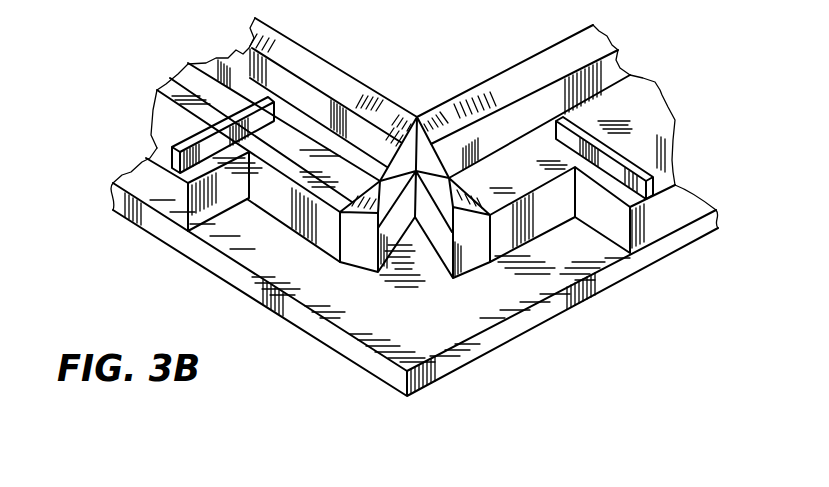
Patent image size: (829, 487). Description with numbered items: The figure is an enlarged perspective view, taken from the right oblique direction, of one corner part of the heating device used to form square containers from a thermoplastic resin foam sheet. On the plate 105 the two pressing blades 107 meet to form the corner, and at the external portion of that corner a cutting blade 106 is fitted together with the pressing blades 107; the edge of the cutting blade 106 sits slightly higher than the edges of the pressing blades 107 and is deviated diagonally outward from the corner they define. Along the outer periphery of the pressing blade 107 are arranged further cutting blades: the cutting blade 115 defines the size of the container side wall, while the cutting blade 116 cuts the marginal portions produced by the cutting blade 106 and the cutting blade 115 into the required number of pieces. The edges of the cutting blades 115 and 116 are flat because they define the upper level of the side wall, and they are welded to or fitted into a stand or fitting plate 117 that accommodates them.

The plate 105 is at (590, 266).
The cutting blade 106 is at (381, 215).
The pressing blade 107 is at (600, 43).
The cutting blade 115 is at (338, 174).
The cutting blade 116 is at (172, 148).
The fitting plate 117 is at (185, 212).